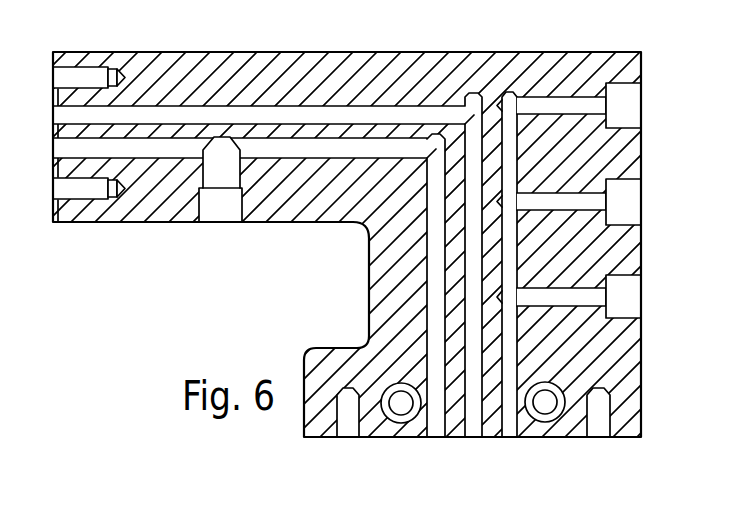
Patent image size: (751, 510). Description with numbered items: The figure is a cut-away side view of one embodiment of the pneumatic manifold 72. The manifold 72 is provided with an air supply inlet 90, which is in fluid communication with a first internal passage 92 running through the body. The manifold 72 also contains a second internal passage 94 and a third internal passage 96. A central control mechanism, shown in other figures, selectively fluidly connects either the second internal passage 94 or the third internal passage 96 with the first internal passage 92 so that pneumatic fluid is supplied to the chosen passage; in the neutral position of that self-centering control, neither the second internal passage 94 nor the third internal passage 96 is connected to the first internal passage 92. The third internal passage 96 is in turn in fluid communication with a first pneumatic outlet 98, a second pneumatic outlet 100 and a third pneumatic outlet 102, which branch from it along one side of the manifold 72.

The pneumatic manifold 72 is at (172, 310).
The air supply inlet 90 is at (219, 205).
The first internal passage 92 is at (342, 152).
The second internal passage 94 is at (238, 115).
The third internal passage 96 is at (510, 97).
The first pneumatic outlet 98 is at (627, 107).
The second pneumatic outlet 100 is at (623, 203).
The third pneumatic outlet 102 is at (625, 298).